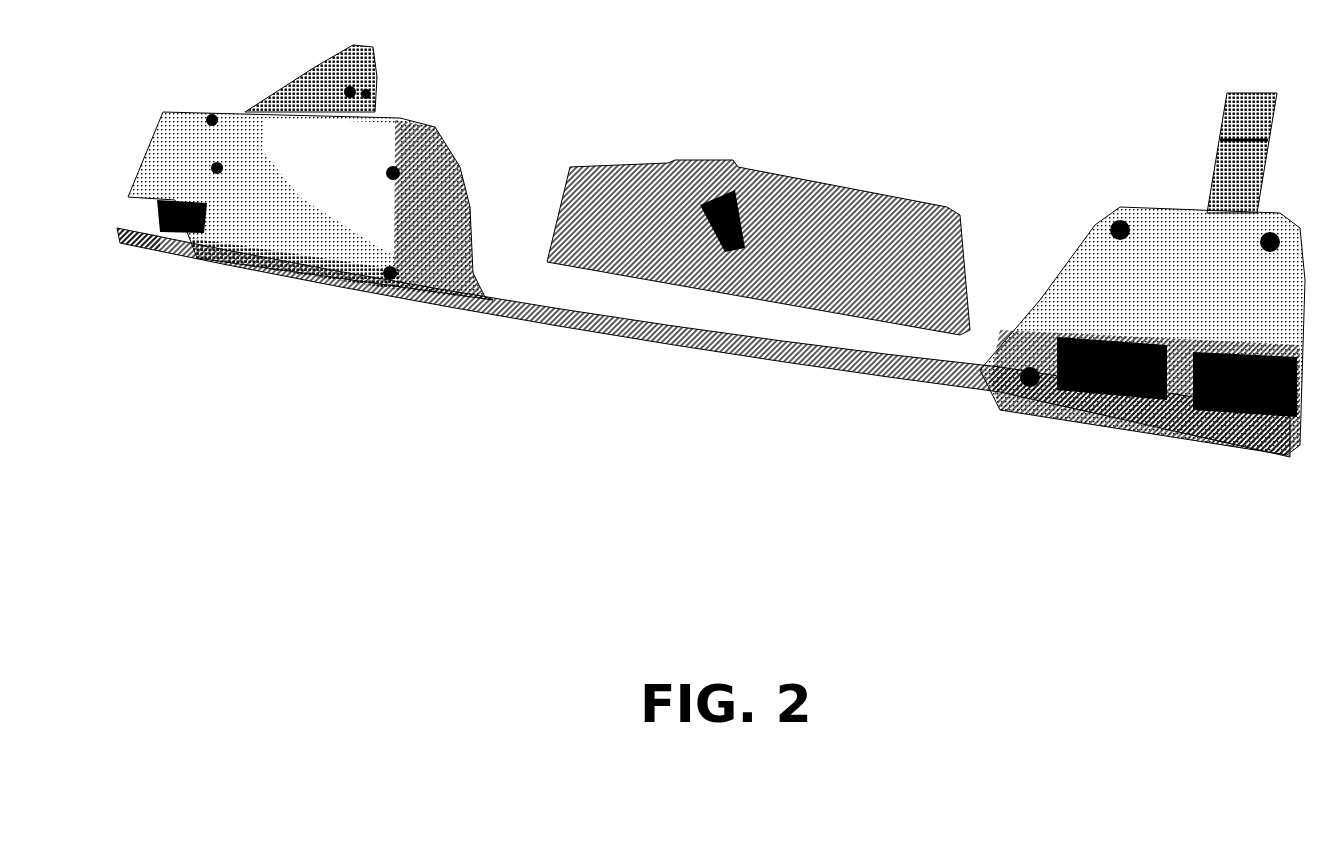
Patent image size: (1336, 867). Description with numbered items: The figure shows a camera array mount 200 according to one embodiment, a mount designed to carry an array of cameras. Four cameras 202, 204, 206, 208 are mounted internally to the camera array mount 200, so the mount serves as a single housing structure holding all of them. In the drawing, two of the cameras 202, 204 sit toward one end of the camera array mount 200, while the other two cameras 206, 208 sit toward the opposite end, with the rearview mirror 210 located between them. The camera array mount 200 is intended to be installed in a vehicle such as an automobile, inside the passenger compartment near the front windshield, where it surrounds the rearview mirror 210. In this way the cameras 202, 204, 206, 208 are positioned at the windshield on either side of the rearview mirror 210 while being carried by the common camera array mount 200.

The camera array mount 200 is at (585, 432).
The camera 202 is at (138, 220).
The camera 204 is at (194, 241).
The camera 206 is at (1109, 402).
The camera 208 is at (1258, 420).
The rearview mirror 210 is at (838, 158).